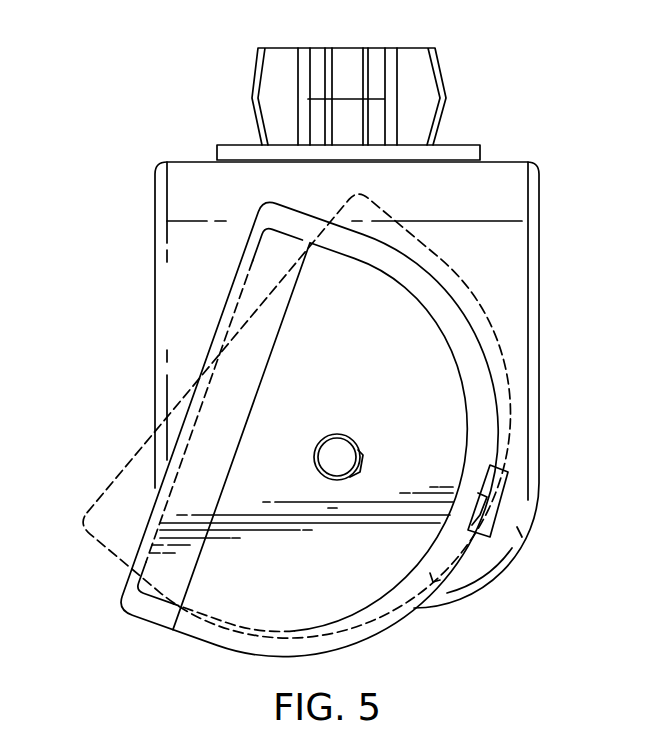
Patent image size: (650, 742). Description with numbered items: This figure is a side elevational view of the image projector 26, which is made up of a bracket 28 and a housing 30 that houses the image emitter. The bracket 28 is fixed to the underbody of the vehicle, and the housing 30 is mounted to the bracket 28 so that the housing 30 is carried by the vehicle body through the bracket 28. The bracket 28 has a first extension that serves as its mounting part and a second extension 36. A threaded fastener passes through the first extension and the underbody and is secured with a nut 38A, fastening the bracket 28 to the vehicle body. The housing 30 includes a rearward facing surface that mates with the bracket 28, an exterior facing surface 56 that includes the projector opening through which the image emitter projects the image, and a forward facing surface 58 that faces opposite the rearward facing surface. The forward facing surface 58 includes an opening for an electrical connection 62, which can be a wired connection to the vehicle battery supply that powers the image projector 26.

The image projector 26 is at (330, 378).
The bracket 28 is at (382, 311).
The housing 30 is at (330, 440).
The second extension 36 is at (533, 273).
The nut 38A is at (256, 72).
The exterior facing surface 56 is at (487, 383).
The forward facing surface 58 is at (330, 585).
The electrical connection 62 is at (333, 455).